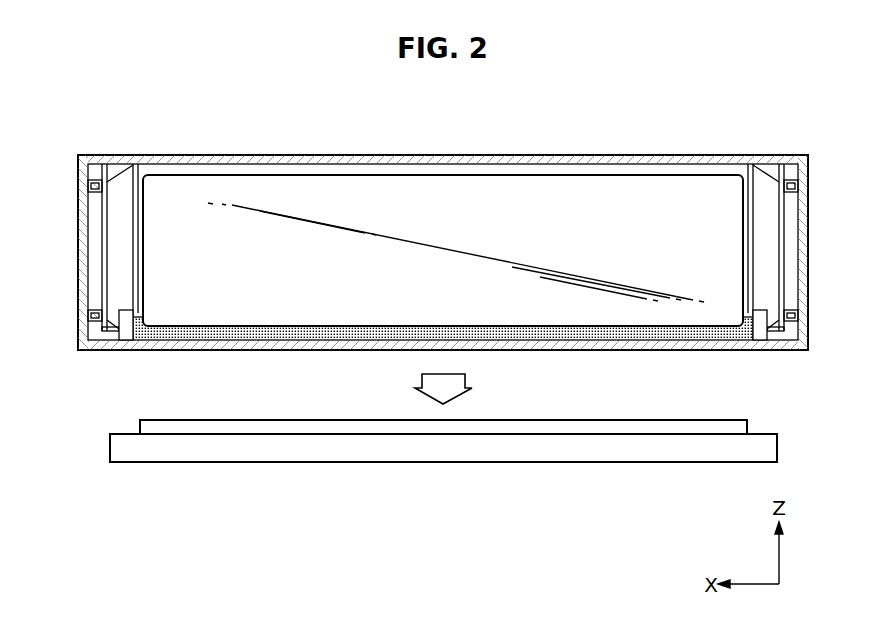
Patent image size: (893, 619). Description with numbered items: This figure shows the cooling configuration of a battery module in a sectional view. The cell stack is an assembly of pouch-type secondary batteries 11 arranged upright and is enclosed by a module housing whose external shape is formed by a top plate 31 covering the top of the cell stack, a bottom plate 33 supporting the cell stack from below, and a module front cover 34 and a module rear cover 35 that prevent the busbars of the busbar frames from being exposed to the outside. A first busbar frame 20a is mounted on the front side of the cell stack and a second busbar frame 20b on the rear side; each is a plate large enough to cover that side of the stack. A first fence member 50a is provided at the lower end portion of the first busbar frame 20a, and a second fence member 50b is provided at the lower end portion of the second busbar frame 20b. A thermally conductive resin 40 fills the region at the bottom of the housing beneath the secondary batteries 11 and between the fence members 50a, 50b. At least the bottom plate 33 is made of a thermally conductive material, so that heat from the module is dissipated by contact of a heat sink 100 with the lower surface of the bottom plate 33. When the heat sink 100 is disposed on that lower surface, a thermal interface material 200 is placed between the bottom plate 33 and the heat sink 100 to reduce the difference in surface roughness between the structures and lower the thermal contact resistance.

The secondary battery 11 is at (388, 188).
The top plate 31 is at (669, 160).
The bottom plate 33 is at (672, 350).
The module front cover 34 is at (78, 207).
The module rear cover 35 is at (808, 207).
The first busbar frame 20a is at (107, 327).
The second busbar frame 20b is at (779, 327).
The first fence member 50a is at (127, 333).
The second fence member 50b is at (759, 333).
The thermally conductive resin 40 is at (593, 340).
The thermal interface material 200 is at (748, 427).
The heat sink 100 is at (778, 447).